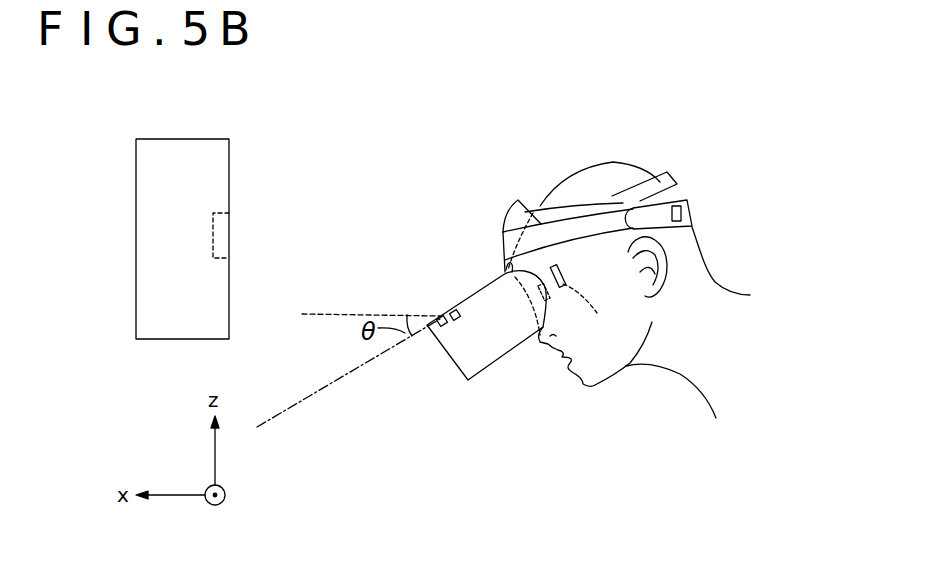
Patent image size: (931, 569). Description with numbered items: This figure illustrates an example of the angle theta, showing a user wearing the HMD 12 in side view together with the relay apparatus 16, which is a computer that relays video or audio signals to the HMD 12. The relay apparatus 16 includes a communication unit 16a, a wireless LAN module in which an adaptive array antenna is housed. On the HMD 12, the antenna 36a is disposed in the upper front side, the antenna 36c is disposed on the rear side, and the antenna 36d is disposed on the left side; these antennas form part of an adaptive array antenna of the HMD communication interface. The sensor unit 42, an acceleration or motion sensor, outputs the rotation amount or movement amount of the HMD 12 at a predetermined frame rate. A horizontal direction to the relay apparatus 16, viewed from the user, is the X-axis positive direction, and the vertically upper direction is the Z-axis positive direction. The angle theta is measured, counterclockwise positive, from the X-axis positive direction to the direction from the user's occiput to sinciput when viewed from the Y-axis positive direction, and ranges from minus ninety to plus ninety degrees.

The HMD 12 is at (510, 350).
The relay apparatus 16 is at (182, 139).
The communication unit 16a is at (218, 260).
The antenna 36a is at (445, 328).
The antenna 36c is at (692, 215).
The antenna 36d is at (591, 304).
The sensor unit 42 is at (456, 316).